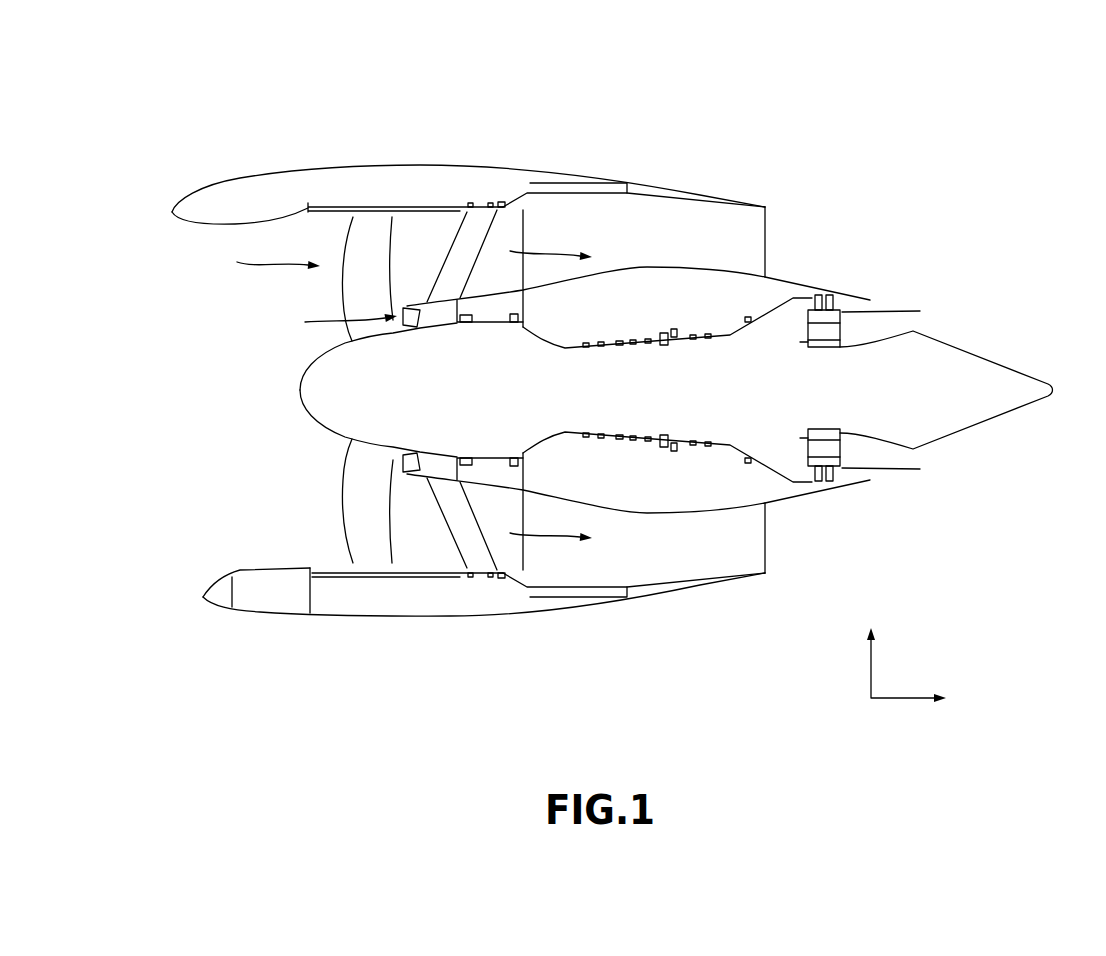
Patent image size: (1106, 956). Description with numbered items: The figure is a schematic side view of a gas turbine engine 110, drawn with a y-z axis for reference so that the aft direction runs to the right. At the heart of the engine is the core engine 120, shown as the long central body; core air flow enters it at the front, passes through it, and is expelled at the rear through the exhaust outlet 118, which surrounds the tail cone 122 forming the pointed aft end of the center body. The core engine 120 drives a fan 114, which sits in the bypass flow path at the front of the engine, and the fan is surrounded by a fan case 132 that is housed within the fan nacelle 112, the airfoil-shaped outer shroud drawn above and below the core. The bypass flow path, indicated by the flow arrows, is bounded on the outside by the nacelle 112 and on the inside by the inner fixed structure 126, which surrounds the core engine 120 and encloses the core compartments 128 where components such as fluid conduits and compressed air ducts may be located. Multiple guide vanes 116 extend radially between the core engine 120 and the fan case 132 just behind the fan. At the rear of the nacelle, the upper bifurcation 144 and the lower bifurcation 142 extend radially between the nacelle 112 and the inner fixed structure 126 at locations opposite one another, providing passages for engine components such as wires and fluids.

The gas turbine engine 110 is at (778, 120).
The nacelle 112 is at (343, 156).
The fan 114 is at (355, 497).
The guide vanes 116 is at (462, 263).
The exhaust outlet 118 is at (910, 323).
The core engine 120 is at (658, 331).
The tail cone 122 is at (953, 418).
The inner fixed structure 126 is at (658, 264).
The core compartment 128 is at (673, 501).
The fan case 132 is at (338, 577).
The lower bifurcation 142 is at (749, 561).
The upper bifurcation 144 is at (766, 223).